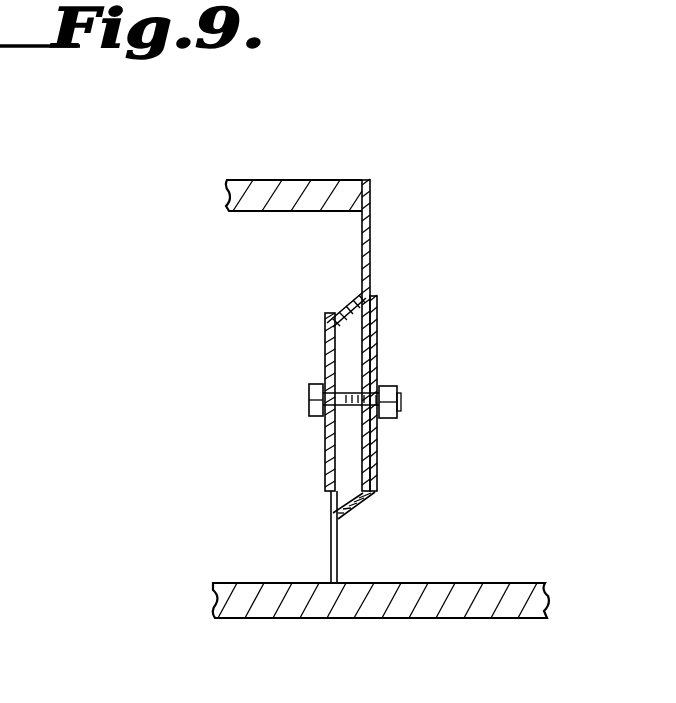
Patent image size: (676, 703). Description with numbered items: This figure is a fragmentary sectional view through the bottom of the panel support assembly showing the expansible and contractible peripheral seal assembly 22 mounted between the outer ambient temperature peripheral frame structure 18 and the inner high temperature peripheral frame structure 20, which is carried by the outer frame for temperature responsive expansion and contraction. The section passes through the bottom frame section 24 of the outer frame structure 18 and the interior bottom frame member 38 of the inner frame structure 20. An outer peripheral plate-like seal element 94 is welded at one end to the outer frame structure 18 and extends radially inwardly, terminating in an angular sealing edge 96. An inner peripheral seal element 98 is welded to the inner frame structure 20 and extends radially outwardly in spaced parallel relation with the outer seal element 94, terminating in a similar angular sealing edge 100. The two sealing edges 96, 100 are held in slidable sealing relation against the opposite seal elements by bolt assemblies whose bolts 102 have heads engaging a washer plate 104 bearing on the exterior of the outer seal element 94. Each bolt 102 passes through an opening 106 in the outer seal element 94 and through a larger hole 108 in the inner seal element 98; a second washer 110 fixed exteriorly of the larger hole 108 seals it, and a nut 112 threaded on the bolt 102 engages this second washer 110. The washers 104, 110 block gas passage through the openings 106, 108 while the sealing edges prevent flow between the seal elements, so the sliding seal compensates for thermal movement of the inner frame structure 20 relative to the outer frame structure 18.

The outer ambient temperature peripheral frame structure 18 is at (492, 572).
The inner high temperature peripheral frame structure 20 is at (348, 174).
The expansible and contractible seal assembly 22 is at (389, 345).
The bottom frame section 24 is at (384, 621).
The interior bottom frame member 38 is at (298, 150).
The outer peripheral plate-like seal element 94 is at (330, 534).
The angular sealing edge 96 is at (352, 306).
The inner peripheral seal element 98 is at (372, 263).
The angular sealing edge 100 is at (346, 507).
The bolt 102 is at (309, 401).
The washer plate 104 is at (323, 343).
The opening 106 is at (319, 417).
The larger hole 108 is at (380, 420).
The second washer 110 is at (376, 307).
The nut 112 is at (386, 389).